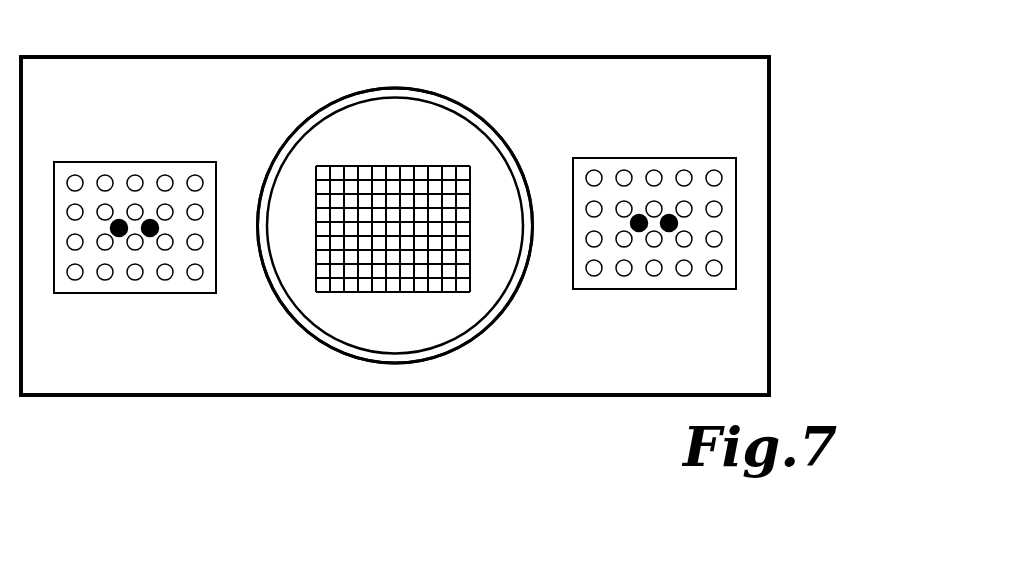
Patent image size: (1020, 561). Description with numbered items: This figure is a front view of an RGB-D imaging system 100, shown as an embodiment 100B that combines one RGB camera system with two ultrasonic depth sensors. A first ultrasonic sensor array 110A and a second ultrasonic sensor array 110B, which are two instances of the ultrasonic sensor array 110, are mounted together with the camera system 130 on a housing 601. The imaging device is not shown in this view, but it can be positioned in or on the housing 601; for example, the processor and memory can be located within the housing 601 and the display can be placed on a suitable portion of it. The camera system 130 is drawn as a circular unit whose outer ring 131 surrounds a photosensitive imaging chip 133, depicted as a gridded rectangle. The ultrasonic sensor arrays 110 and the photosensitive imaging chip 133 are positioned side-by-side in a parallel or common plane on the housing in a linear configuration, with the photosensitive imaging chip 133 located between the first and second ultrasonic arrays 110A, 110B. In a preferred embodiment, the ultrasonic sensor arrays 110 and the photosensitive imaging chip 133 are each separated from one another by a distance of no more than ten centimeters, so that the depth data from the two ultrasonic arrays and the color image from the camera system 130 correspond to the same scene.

The RGB-D imaging system 100 is at (796, 147).
The embodiment of RGB-D imaging system 100B is at (787, 97).
The ultrasonic sensor array 110 is at (118, 293).
The first ultrasonic sensor array 110A is at (185, 293).
The second ultrasonic sensor array 110B is at (710, 289).
The camera system 130 is at (497, 121).
The display frame ring 131 is at (308, 338).
The photosensitive imaging chip 133 is at (392, 293).
The housing 601 is at (385, 397).